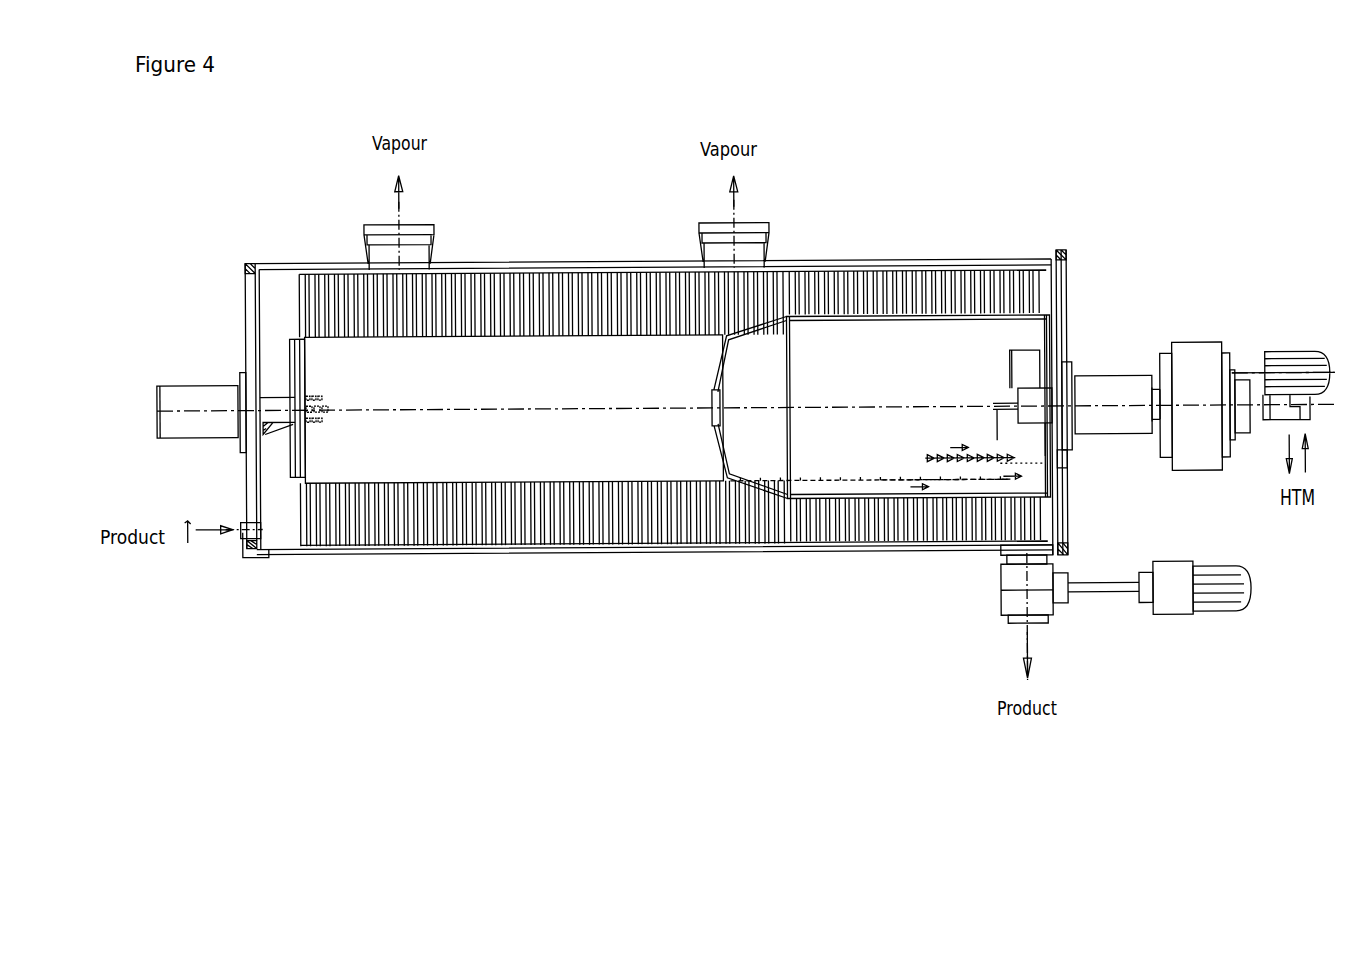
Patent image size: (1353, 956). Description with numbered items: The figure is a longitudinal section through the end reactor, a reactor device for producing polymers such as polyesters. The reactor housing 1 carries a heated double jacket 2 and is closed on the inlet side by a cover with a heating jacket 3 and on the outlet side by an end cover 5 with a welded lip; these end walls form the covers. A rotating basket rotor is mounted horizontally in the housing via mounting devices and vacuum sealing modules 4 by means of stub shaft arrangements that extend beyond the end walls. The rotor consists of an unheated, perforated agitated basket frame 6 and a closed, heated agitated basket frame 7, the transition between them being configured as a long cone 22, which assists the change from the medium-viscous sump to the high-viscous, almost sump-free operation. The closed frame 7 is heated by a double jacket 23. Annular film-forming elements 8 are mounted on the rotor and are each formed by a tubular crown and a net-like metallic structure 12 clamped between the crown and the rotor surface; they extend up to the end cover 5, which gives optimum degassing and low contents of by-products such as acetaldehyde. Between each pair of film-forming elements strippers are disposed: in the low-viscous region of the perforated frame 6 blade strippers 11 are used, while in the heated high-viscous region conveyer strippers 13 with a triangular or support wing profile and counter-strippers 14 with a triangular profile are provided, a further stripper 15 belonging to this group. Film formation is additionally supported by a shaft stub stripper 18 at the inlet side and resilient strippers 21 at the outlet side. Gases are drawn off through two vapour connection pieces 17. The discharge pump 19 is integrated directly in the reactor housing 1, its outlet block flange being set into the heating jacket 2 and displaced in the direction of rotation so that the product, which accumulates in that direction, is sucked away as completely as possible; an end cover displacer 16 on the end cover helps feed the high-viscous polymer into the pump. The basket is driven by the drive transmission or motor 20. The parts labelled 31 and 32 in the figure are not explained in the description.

The reactor housing 1 is at (652, 187).
The heated double jacket 2 is at (258, 191).
The cover with heating jacket 3 is at (172, 407).
The mounting devices and vacuum sealing modules 4 is at (628, 274).
The end cover 5 is at (1099, 434).
The perforated agitated basket frame 6 is at (505, 295).
The closed heated agitated basket frame 7 is at (917, 303).
The annular film-forming elements 8 is at (674, 602).
The blade strippers 11 is at (655, 636).
The net-like metallic structure 12 is at (672, 222).
The conveyer strippers 13 is at (901, 602).
The counter-strippers 14 is at (942, 584).
The stripper 15 is at (1040, 508).
The end cover displacer 16 is at (1116, 633).
The vapour connection piece 17 is at (566, 188).
The shaft stub stripper 18 is at (182, 432).
The discharge pump 19 is at (1148, 643).
The drive transmission or motor 20 is at (1220, 290).
The resilient strippers 21 is at (1073, 332).
The long cone 22 is at (768, 304).
The double jacket 23 is at (917, 215).
The product inlet 31 is at (207, 623).
The product outlet 32 is at (990, 635).